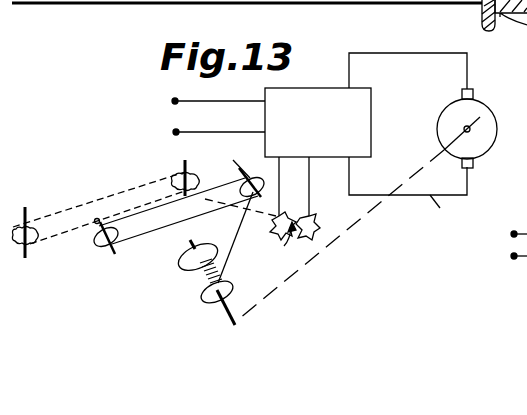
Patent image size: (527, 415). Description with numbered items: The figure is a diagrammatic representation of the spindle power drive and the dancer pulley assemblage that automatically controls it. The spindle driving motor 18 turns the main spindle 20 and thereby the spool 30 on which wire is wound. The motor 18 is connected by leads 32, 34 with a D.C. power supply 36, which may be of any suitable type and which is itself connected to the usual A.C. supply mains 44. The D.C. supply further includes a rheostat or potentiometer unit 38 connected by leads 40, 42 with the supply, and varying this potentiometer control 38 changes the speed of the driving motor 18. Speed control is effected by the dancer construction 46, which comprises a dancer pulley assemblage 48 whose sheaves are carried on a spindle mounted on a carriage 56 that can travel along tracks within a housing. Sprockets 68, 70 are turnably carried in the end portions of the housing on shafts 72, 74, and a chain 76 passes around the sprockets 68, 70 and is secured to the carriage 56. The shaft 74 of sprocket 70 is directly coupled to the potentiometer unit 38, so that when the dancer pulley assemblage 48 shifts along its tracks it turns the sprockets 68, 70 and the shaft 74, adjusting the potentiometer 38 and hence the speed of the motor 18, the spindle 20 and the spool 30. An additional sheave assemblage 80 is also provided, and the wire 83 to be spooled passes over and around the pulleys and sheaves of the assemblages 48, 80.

The spindle driving motor 18 is at (497, 135).
The spindle 20 is at (224, 311).
The spool 30 is at (185, 259).
The lead 32 is at (437, 53).
The lead 34 is at (440, 208).
The D.C. power supply 36 is at (330, 89).
The potentiometer unit 38 is at (282, 242).
The lead 40 is at (280, 191).
The lead 42 is at (311, 191).
The A.C. supply mains 44 is at (251, 131).
The dancer construction 46 is at (98, 191).
The dancer pulley assemblage 48 is at (99, 252).
The carriage 56 is at (98, 219).
The sprocket 68 is at (17, 247).
The sprocket 70 is at (174, 179).
The shaft 72 is at (26, 206).
The shaft 74 is at (184, 167).
The chain 76 is at (67, 207).
The additional sheave assemblage 80 is at (256, 168).
The wire 83 is at (234, 238).